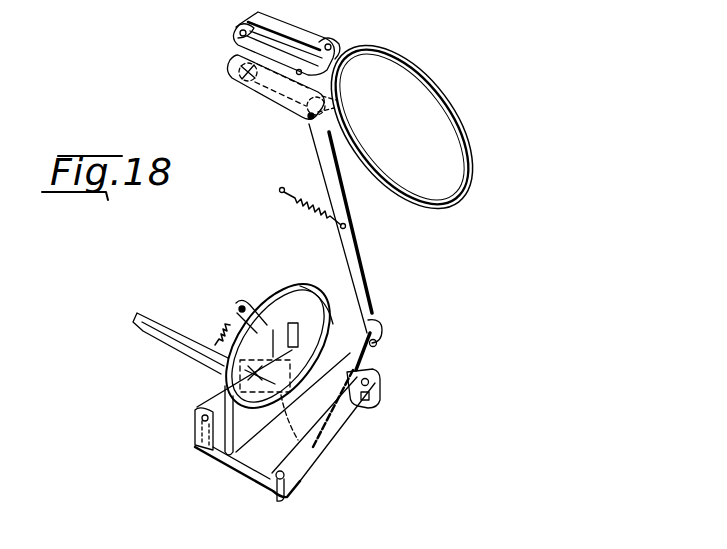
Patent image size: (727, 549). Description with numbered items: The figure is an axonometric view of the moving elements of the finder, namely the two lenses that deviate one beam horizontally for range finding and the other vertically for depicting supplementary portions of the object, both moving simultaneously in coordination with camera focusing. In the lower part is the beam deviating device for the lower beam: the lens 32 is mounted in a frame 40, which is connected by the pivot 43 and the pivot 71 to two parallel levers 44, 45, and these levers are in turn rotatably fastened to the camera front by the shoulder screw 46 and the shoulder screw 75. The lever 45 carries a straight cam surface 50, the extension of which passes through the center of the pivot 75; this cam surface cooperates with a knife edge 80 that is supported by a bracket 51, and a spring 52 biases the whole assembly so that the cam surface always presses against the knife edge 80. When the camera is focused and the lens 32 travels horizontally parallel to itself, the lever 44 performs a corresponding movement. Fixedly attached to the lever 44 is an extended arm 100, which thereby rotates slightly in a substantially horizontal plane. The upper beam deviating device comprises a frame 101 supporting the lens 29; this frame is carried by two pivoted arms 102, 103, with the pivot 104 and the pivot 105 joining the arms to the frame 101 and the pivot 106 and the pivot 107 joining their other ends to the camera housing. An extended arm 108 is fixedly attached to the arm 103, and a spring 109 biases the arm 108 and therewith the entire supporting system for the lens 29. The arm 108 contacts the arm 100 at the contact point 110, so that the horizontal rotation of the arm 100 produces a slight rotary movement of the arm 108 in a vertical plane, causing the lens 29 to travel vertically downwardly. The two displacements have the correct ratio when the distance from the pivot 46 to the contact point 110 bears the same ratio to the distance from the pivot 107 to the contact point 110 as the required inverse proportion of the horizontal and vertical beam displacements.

The lens 29 is at (433, 137).
The lens 32 is at (327, 314).
The frame 40 is at (288, 300).
The pivot 43 is at (200, 412).
The lever 44 is at (228, 468).
The lever 45 is at (367, 368).
The shoulder screw 46 is at (282, 500).
The straight cam surface 50 is at (305, 450).
The bracket 51 is at (152, 330).
The spring 52 is at (226, 323).
The pivot 71 is at (358, 312).
The shoulder screw 75 is at (372, 383).
The knife edge 80 is at (232, 362).
The extended arm 100 is at (323, 428).
The frame 101 is at (425, 88).
The pivoted arm 102 is at (282, 24).
The pivoted arm 103 is at (277, 103).
The pivot 104 is at (235, 33).
The pivot 105 is at (230, 72).
The pivot 106 is at (334, 41).
The pivot 107 is at (310, 126).
The extended arm 108 is at (360, 268).
The spring 109 is at (293, 200).
The contact point 110 is at (381, 343).